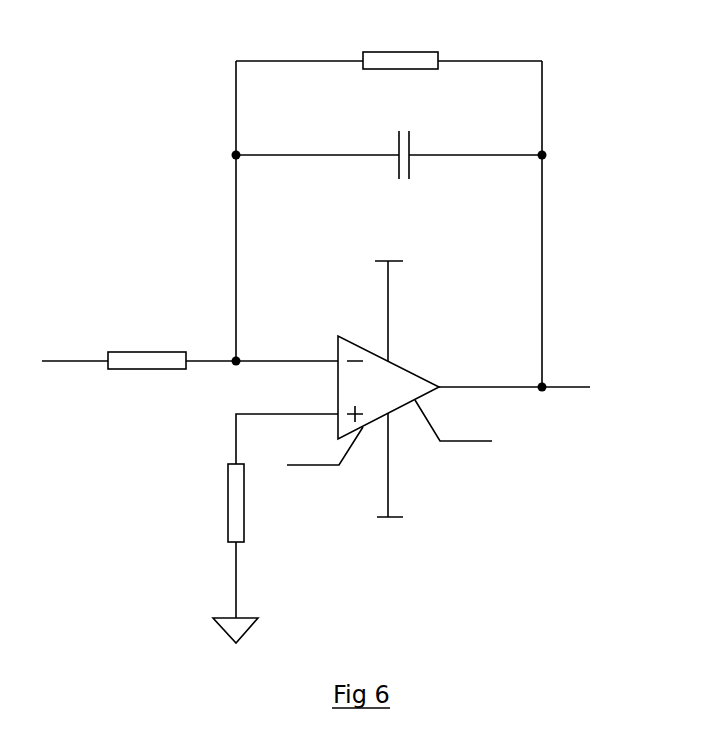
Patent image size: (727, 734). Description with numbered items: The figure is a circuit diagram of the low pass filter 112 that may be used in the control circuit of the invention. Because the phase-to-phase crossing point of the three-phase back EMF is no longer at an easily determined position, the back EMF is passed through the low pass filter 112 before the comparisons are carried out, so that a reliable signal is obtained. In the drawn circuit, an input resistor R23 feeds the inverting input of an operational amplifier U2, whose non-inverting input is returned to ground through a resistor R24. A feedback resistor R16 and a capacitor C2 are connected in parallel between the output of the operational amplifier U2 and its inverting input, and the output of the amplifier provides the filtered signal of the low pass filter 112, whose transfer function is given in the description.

The low pass filter 112 is at (648, 392).
The feedback resistor 100K R16 is at (389, 62).
The feedback capacitor 0.1uF C2 is at (389, 156).
The input resistor 2K R23 is at (190, 361).
The bias resistor 2K R24 is at (275, 528).
The operational amplifier OP07C U2 is at (398, 391).